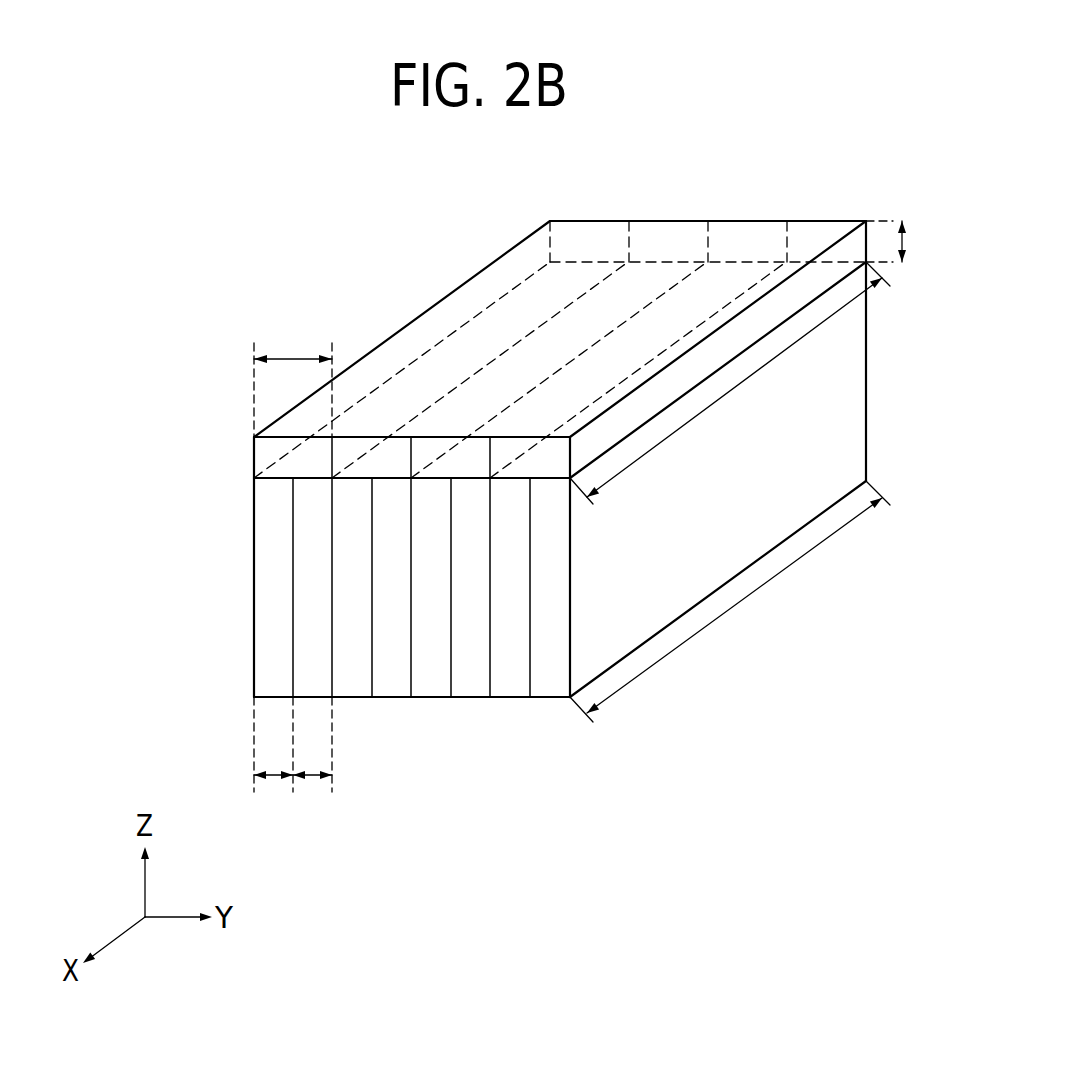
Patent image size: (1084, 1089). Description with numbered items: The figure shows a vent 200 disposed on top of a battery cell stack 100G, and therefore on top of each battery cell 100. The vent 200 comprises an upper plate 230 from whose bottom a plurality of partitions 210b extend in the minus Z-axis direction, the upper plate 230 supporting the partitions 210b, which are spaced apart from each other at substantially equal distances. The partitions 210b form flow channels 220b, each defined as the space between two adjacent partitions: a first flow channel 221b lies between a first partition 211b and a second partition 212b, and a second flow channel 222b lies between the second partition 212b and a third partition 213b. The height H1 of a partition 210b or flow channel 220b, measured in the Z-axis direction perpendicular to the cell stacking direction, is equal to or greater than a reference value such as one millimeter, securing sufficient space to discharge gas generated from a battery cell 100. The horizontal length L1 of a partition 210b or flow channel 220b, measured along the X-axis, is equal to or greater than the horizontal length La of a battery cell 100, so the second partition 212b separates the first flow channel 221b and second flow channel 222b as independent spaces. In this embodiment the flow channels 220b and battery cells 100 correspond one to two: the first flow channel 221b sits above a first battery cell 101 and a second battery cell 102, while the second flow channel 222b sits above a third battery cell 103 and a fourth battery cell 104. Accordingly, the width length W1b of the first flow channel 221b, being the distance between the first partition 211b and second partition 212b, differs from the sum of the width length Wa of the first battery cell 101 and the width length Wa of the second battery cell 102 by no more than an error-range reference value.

The vent 200 is at (406, 254).
The upper plate 230 is at (507, 270).
The partition 210b is at (137, 372).
The first partition 211b is at (254, 460).
The second partition 212b is at (332, 450).
The third partition 213b is at (410, 452).
The flow channel 220b is at (137, 492).
The first flow channel 221b is at (282, 473).
The second flow channel 222b is at (360, 473).
The battery cell stack 100G is at (237, 595).
The battery cell 100 is at (118, 633).
The first battery cell 101 is at (262, 633).
The second battery cell 102 is at (302, 653).
The third battery cell 103 is at (342, 669).
The fourth battery cell 104 is at (378, 685).
The width length of first flow channel W1b is at (293, 378).
The width length of battery cell Wa is at (293, 759).
The height of partition or flow channel H1 is at (903, 241).
The horizontal length of partition or flow channel L1 is at (730, 383).
The horizontal length of battery cell La is at (730, 601).